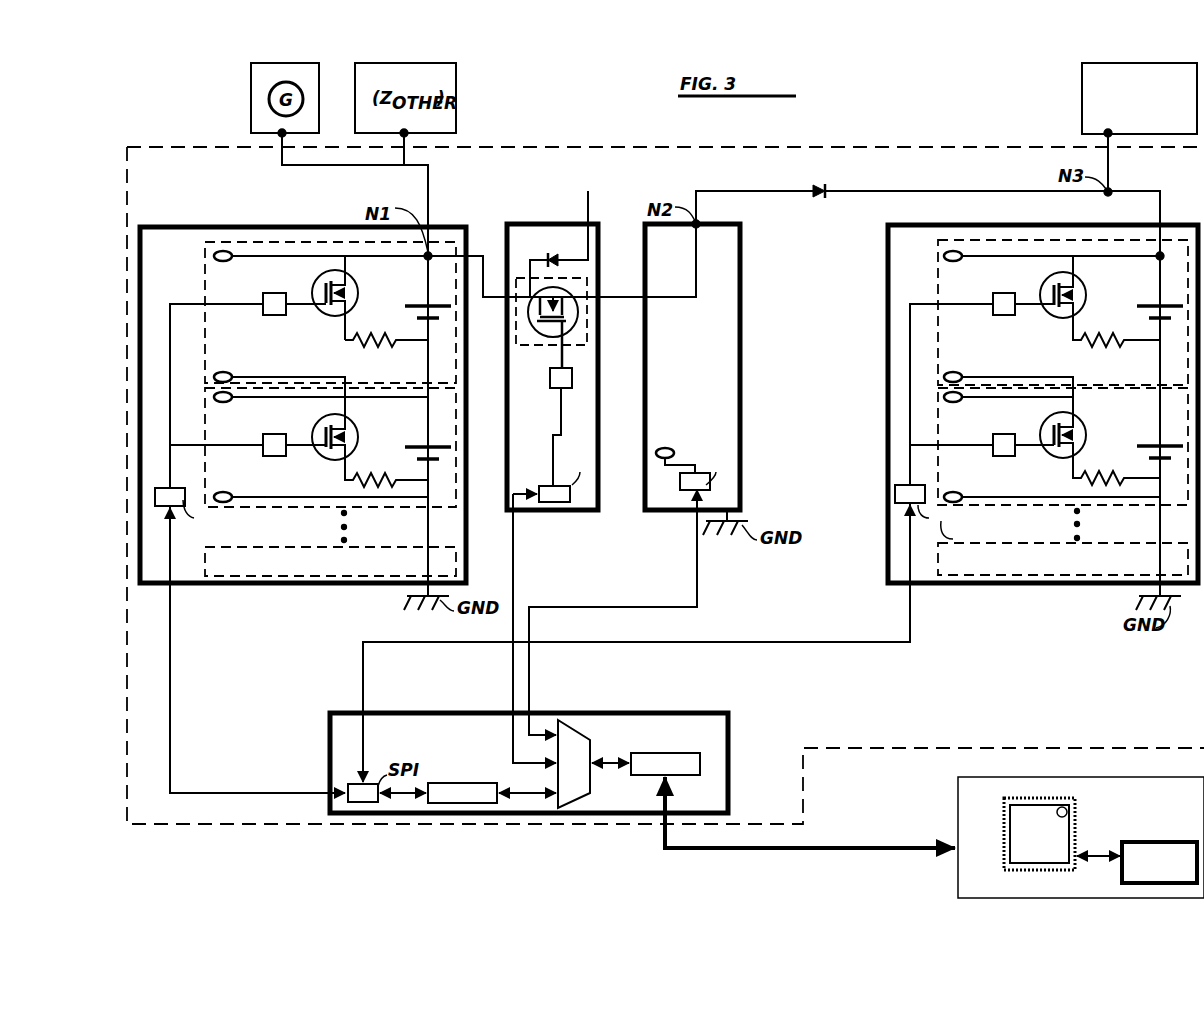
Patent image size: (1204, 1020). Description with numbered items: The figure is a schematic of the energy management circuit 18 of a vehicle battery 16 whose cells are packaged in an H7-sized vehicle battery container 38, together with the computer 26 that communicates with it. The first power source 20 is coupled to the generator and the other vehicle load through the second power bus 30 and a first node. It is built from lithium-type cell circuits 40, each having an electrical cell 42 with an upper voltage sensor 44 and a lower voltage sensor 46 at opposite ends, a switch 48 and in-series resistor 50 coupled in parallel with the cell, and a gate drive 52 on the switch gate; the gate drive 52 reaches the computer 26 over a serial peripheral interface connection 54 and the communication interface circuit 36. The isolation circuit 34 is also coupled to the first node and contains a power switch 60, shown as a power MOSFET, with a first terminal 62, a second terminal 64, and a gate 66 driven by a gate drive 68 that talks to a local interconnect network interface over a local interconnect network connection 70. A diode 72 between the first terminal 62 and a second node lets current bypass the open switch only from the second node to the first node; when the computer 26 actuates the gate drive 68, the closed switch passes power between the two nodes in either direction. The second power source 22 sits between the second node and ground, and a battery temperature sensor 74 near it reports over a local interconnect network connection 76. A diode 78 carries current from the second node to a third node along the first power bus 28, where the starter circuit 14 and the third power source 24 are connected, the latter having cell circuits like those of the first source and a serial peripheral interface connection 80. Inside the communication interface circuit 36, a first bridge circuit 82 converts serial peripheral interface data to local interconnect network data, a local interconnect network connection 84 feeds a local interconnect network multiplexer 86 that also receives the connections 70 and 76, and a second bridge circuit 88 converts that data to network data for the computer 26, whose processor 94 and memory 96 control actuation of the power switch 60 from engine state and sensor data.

The starter circuit 14 is at (1153, 112).
The vehicle battery 16 is at (888, 129).
The energy management circuit 18 is at (872, 709).
The first power source 20 is at (168, 221).
The second power source 22 is at (727, 218).
The third power source 24 is at (911, 219).
The computer 26 is at (1131, 776).
The first power bus 28 is at (945, 190).
The second power bus 30 is at (432, 171).
The isolation circuit 34 is at (521, 220).
The communication interface circuit 36 is at (336, 711).
The vehicle battery container 38 is at (587, 146).
The lithium-type cell circuit 40 is at (203, 291).
The electrical cell 42 is at (424, 305).
The upper voltage sensor 44 is at (228, 262).
The lower voltage sensor 46 is at (224, 371).
The switch 48 is at (317, 284).
The in-series resistor 50 is at (390, 340).
The gate drive 52 is at (275, 315).
The SPI connection 54 is at (172, 651).
The power switch 60 is at (533, 346).
The first terminal 62 is at (542, 308).
The second terminal 64 is at (563, 299).
The gate 66 is at (572, 334).
The gate drive 68 is at (550, 386).
The LIN connection 70 is at (515, 560).
The diode 72 is at (557, 253).
The battery temperature sensor 74 is at (664, 445).
The LIN connection 76 is at (698, 595).
The diode 78 is at (815, 187).
The SPI connection 80 is at (913, 640).
The first bridge circuit 82 is at (445, 783).
The LIN connection 84 is at (533, 794).
The LIN multiplexer 86 is at (590, 747).
The second bridge circuit 88 is at (648, 753).
The processor 94 is at (1050, 847).
The memory 96 is at (1171, 877).